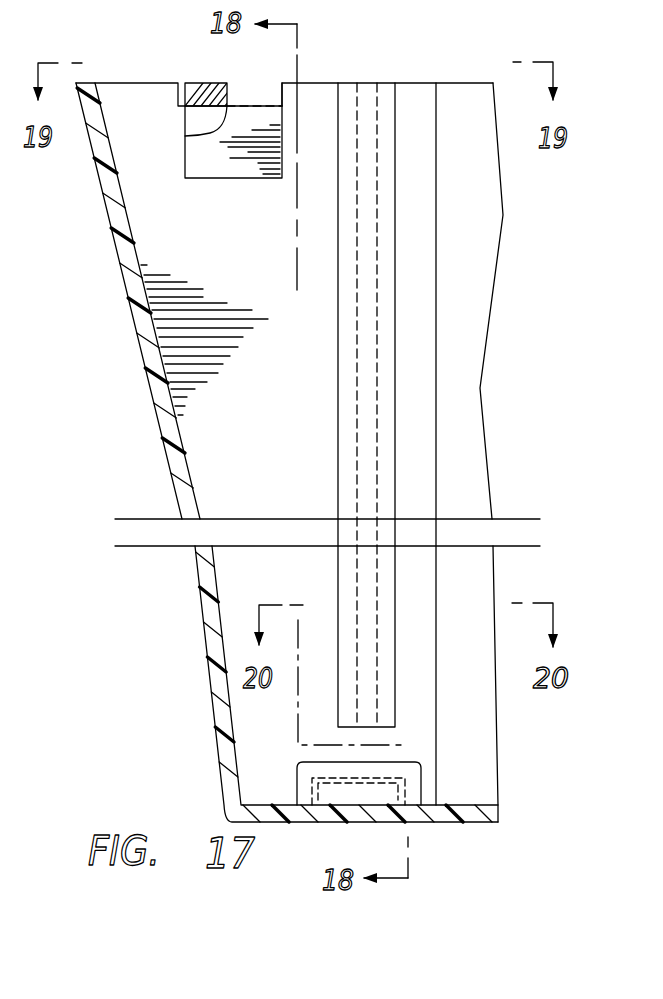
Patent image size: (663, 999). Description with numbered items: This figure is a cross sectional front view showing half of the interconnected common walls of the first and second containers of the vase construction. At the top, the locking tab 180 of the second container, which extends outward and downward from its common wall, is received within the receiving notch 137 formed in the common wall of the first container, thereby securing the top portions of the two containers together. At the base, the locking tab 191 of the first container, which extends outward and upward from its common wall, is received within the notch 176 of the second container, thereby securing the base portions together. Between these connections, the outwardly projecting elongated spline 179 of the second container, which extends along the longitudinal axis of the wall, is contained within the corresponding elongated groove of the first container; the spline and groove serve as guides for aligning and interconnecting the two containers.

The receiving notch 137 is at (284, 100).
The spline 179 is at (367, 212).
The locking tab 180 is at (200, 159).
The receiving notch 176 is at (308, 786).
The locking tab 191 is at (362, 790).